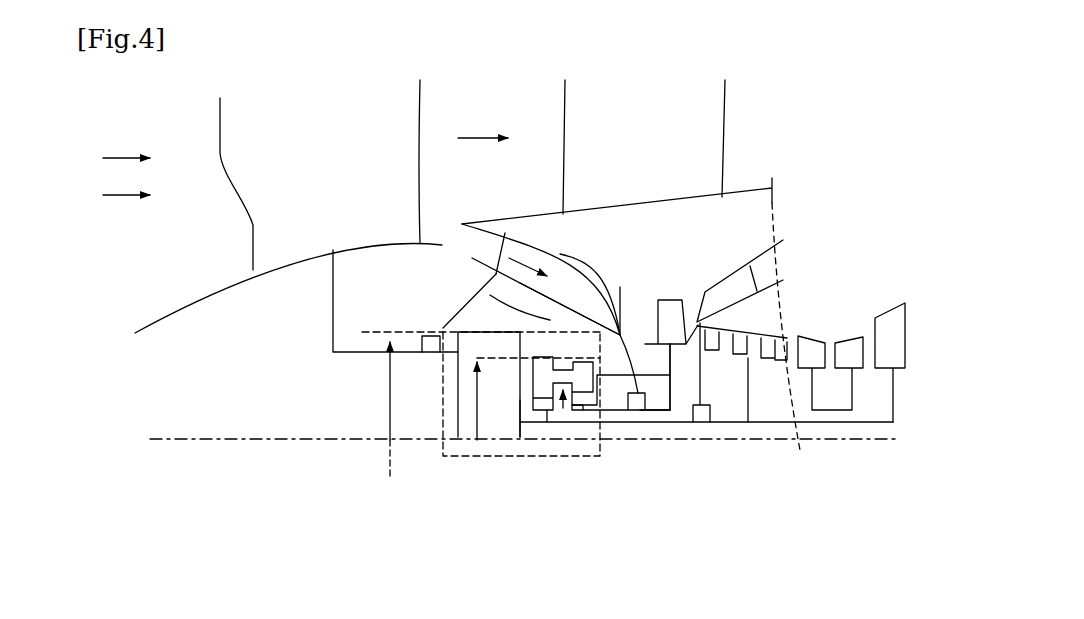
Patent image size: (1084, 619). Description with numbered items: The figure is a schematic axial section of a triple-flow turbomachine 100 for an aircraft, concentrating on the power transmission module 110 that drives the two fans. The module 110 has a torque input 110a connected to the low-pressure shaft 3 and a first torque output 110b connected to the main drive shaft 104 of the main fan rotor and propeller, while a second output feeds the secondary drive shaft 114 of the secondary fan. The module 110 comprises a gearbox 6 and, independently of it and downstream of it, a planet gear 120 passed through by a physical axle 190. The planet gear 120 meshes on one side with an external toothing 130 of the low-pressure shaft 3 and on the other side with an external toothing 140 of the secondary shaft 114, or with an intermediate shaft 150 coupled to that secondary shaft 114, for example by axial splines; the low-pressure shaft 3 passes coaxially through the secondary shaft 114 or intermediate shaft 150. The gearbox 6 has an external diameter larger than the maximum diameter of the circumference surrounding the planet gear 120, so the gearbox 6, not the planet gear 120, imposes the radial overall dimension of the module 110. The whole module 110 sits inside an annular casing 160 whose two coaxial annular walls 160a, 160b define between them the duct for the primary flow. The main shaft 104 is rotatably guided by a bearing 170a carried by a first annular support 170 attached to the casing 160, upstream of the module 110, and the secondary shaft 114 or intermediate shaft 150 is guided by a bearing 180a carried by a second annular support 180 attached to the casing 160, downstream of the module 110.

The turbomachine 100 is at (781, 103).
The main drive shaft 104 is at (343, 353).
The power transmission module 110 is at (531, 457).
The torque input 110a is at (523, 428).
The first torque output 110b is at (443, 328).
The secondary drive shaft 114 is at (679, 395).
The planet gear 120 is at (567, 400).
The external toothing of the low-pressure shaft 130 is at (547, 424).
The external toothing of the secondary shaft 140 is at (595, 405).
The intermediate shaft 150 is at (653, 412).
The annular casing 160 is at (570, 253).
The annular wall 160a is at (560, 302).
The annular wall 160b is at (600, 271).
The first annular support 170 is at (541, 352).
The bearing 170a is at (420, 333).
The second annular support 180 is at (716, 361).
The bearing 180a is at (637, 411).
The physical axle 190 is at (627, 348).
The low-pressure shaft 3 is at (840, 423).
The gearbox 6 is at (492, 428).